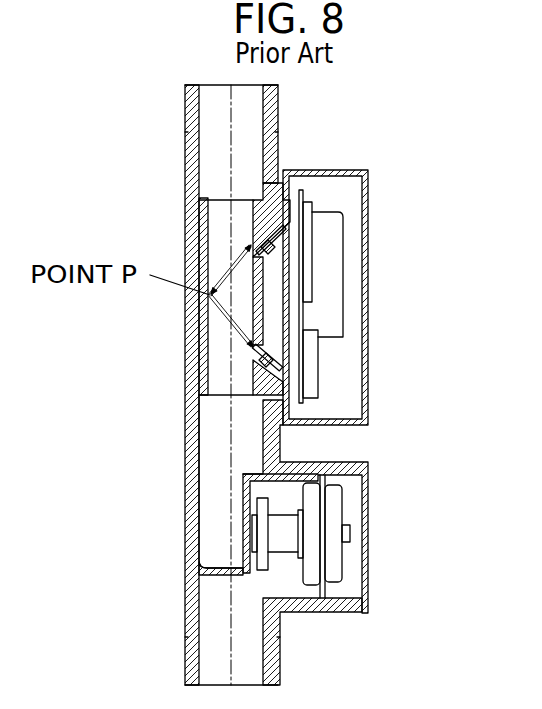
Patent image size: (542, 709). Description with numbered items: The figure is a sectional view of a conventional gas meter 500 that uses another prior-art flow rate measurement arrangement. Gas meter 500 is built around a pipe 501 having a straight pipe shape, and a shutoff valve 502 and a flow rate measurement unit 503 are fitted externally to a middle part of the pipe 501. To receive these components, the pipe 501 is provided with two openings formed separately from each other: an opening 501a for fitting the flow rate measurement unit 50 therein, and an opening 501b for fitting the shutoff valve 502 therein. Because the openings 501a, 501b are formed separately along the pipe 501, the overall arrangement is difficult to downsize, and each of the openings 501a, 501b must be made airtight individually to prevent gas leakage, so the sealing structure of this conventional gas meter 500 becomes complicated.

The gas meter 500 is at (289, 385).
The pipe 501 is at (195, 440).
The opening 501a is at (270, 198).
The opening 501b is at (345, 592).
The shutoff valve 502 is at (330, 515).
The flow rate measurement unit 503 is at (367, 323).
The flow rate measurement unit 50 is at (343, 337).